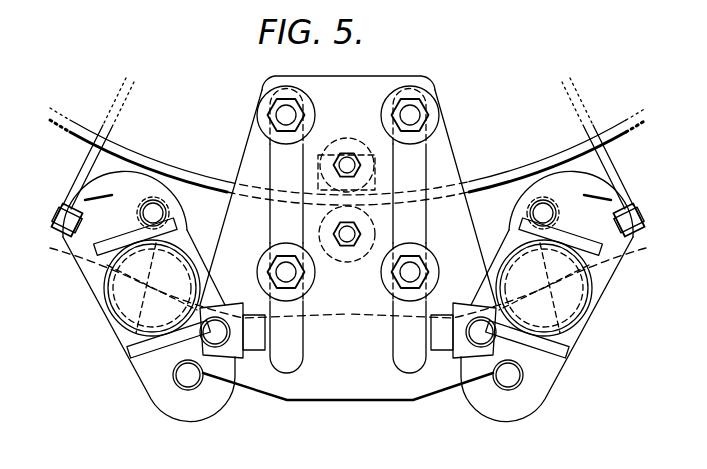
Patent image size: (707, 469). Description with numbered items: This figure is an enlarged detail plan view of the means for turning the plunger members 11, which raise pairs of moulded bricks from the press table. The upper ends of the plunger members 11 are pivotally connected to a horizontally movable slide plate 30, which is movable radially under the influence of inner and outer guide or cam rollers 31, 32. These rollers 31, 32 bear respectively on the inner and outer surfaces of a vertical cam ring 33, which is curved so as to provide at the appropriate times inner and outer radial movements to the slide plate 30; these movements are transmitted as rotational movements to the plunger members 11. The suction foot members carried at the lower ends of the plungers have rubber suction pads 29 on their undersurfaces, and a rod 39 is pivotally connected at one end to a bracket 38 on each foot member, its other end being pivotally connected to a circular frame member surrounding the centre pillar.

The plunger members 11 is at (120, 303).
The rubber suction pads 29 is at (150, 368).
The slide plate 30 is at (252, 155).
The inner guide roller 31 is at (354, 150).
The outer guide roller 32 is at (347, 262).
The cam ring 33 is at (537, 163).
The bracket 38 is at (84, 252).
The rod 39 is at (88, 170).